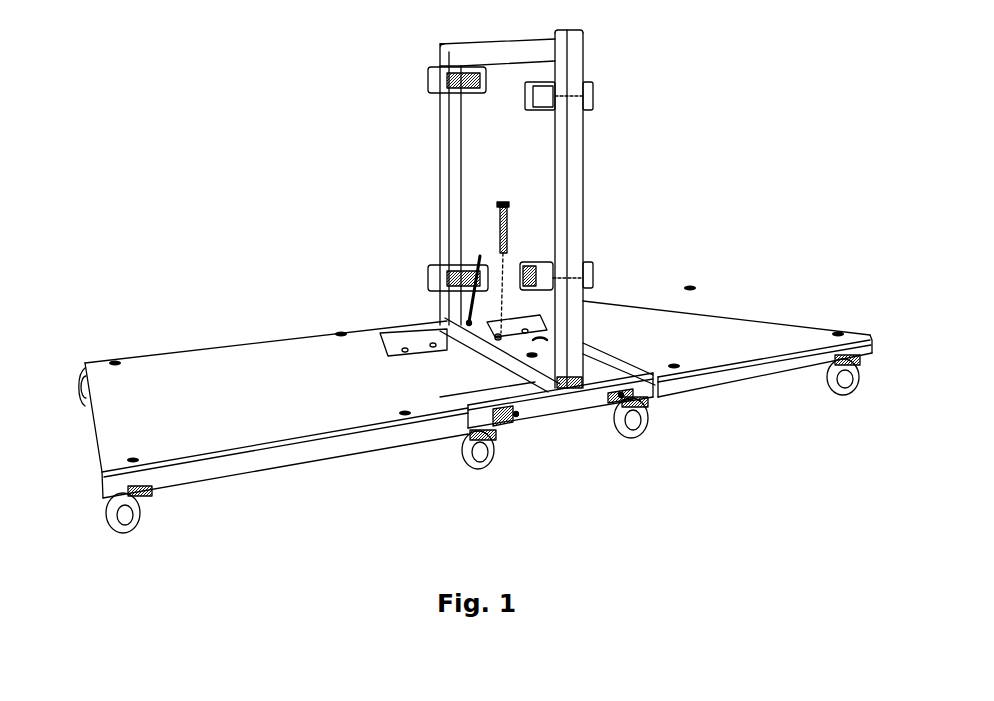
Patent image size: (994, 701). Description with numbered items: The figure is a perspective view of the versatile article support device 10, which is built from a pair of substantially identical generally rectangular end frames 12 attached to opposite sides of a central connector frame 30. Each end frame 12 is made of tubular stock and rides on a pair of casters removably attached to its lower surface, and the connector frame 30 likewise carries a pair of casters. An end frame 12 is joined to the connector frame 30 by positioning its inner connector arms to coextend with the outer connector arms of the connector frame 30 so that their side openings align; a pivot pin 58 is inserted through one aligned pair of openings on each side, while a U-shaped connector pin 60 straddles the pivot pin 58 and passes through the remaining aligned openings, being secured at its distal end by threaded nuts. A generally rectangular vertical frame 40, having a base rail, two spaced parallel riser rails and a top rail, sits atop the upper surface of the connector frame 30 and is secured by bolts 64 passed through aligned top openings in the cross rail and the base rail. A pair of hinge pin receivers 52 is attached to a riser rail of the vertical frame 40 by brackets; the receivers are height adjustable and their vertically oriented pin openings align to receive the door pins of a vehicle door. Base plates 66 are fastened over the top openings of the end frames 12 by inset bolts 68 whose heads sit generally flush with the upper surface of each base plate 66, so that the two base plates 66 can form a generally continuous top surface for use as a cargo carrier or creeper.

The versatile article support device 10 is at (577, 503).
The end frame 12 is at (308, 463).
The connector frame 30 is at (571, 415).
The vertical frame 40 is at (440, 170).
The hinge pin receiver 52 is at (430, 77).
The pivot pin 58 is at (421, 342).
The connector pin 60 is at (527, 415).
The bolt 64 is at (472, 252).
The base plate 66 is at (196, 372).
The bolt 68 is at (113, 360).